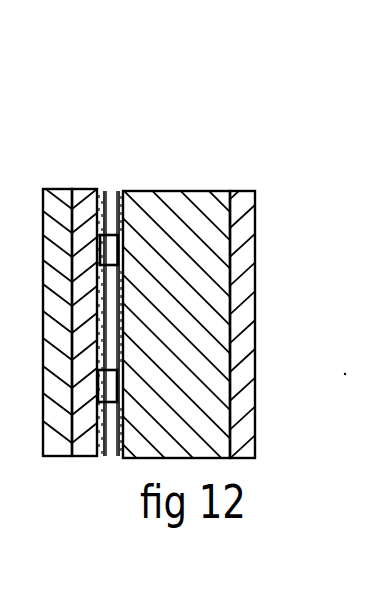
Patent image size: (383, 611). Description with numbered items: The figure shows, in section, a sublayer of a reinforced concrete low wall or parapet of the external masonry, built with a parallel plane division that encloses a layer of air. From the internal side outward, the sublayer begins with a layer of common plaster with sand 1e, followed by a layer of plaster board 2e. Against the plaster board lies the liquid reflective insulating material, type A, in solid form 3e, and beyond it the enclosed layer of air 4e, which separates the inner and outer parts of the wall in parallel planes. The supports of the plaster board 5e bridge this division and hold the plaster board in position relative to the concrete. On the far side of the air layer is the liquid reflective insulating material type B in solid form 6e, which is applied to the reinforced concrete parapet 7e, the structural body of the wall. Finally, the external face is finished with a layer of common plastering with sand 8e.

The layer of common plaster with sand at the internal side 1e is at (45, 187).
The layer of plaster board 2e is at (81, 187).
The liquid reflective insulating material type A in solid form 3e is at (106, 187).
The enclosed layer of air 4e is at (117, 192).
The supports of the plaster board 5e is at (105, 392).
The liquid reflective insulating material type B in solid form 6e is at (112, 194).
The reinforced concrete parapet 7e is at (208, 193).
The layer of common plastering with sand at the external side 8e is at (250, 190).